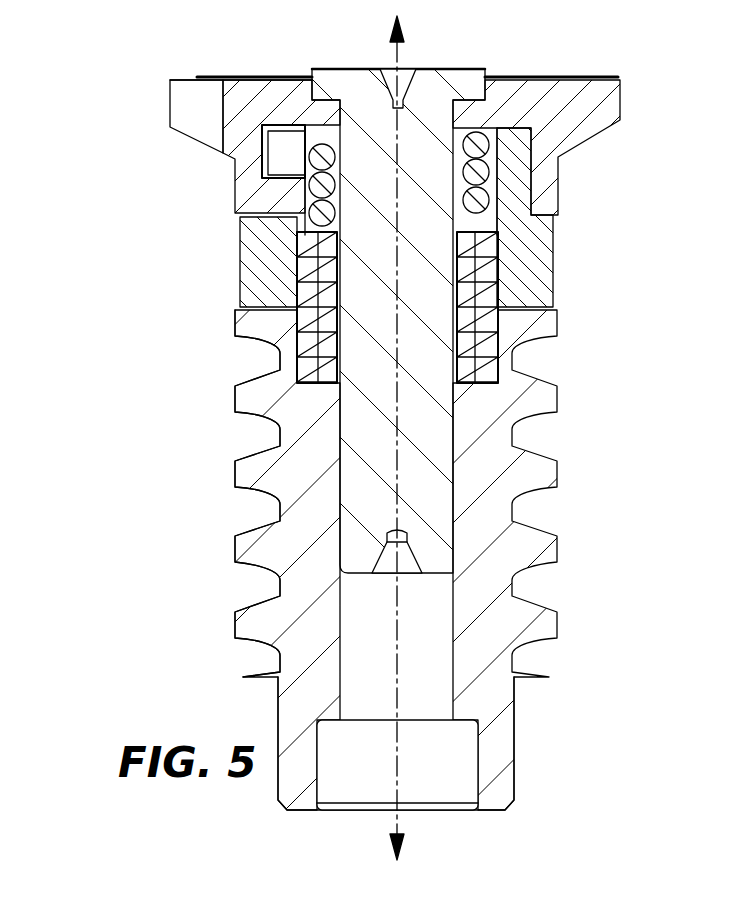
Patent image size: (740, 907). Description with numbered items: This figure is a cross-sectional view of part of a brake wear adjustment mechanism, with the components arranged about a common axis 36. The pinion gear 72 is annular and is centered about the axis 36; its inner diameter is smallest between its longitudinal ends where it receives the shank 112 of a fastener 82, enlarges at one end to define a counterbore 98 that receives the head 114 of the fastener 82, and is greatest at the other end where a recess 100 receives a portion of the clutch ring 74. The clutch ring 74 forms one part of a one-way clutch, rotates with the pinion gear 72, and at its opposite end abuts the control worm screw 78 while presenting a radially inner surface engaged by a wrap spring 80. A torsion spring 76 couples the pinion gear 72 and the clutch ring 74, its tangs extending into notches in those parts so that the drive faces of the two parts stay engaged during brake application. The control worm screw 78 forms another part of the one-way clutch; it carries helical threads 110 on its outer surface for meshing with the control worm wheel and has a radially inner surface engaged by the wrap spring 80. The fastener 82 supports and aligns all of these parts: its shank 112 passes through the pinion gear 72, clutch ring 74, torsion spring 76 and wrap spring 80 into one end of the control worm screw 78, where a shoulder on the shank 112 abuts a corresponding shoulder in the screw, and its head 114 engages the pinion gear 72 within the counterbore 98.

The axis 36 is at (393, 50).
The pinion gear 72 is at (560, 126).
The clutch ring 74 is at (537, 243).
The torsion spring 76 is at (310, 188).
The control worm screw 78 is at (495, 705).
The wrap spring 80 is at (497, 350).
The fastener 82 is at (357, 457).
The counterbore 98 is at (300, 82).
The recess 100 is at (260, 153).
The helical threads 110 is at (237, 550).
The shank 112 is at (300, 355).
The head 114 is at (475, 78).